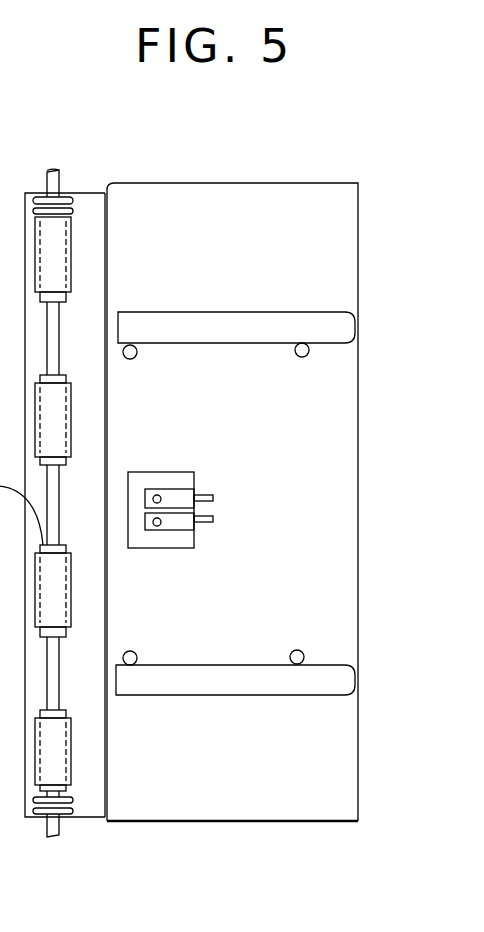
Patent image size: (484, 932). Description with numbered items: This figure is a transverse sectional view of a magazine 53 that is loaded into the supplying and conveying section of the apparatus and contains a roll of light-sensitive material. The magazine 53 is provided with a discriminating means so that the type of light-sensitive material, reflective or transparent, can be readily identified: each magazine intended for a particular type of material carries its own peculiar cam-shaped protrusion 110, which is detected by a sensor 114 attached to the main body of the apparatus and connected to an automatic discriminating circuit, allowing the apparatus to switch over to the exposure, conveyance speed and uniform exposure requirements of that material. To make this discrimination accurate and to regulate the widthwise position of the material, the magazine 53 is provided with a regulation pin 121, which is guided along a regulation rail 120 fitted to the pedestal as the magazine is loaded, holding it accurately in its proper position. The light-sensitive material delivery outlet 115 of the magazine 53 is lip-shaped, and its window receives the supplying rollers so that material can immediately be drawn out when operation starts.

The magazine 53 is at (300, 183).
The cam-shaped protrusion 110 is at (191, 478).
The sensor 114 is at (173, 497).
The light-sensitive material delivery outlet 115 is at (93, 192).
The regulation rail 120 is at (268, 697).
The regulation pin 121 is at (137, 357).